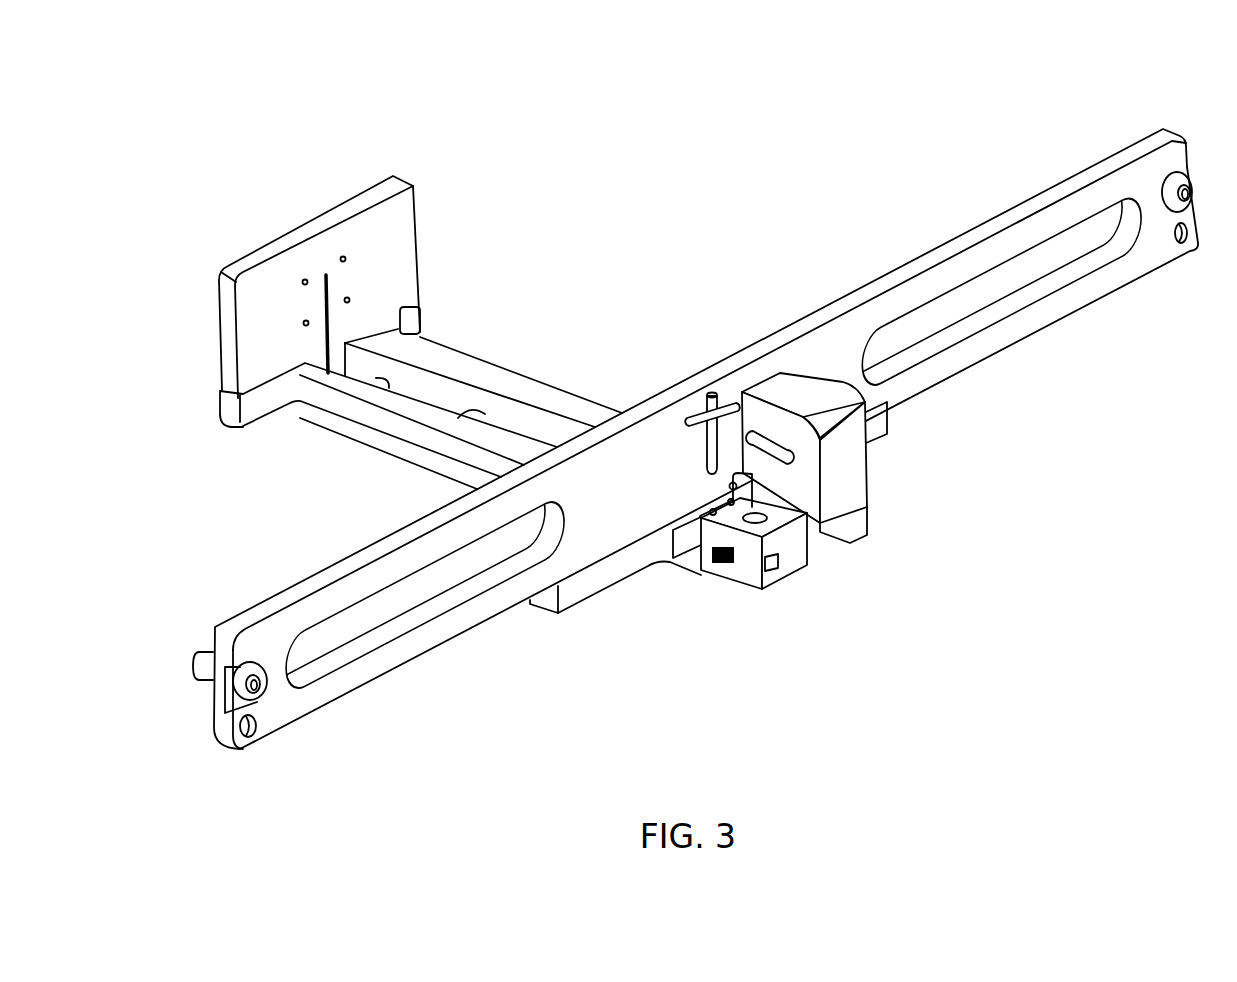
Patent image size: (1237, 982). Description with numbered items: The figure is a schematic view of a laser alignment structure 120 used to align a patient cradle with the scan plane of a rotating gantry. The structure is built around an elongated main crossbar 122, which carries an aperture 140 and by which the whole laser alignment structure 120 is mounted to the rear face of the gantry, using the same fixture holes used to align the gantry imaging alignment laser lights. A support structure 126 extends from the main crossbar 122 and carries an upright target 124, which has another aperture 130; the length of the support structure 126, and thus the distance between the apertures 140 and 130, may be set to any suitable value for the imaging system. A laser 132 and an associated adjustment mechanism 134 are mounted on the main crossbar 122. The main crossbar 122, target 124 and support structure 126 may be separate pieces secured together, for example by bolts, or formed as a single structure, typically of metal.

The laser alignment structure 120 is at (949, 98).
The main crossbar 122 is at (1168, 160).
The target 124 is at (366, 190).
The support structure 126 is at (473, 366).
The aperture 130 is at (325, 262).
The laser 132 is at (800, 372).
The adjustment mechanism 134 is at (745, 560).
The aperture 140 is at (710, 394).